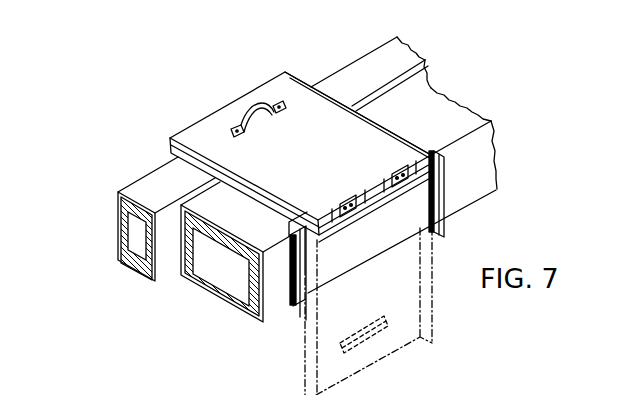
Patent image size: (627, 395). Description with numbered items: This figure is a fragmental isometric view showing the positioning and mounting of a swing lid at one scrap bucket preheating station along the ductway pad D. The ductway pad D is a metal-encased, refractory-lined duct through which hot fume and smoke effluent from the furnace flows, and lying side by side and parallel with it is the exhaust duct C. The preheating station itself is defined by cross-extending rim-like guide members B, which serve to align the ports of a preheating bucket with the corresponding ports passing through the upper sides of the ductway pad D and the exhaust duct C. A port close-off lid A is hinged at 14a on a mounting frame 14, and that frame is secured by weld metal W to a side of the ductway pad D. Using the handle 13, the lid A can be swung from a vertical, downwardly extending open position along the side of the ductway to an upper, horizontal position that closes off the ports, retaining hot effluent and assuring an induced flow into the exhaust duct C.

The handle 13 is at (264, 110).
The mounting frame 14 is at (298, 308).
The hinge 14a is at (397, 203).
The port close-off lid A is at (323, 170).
The rim-like guide member B is at (402, 130).
The exhaust duct C is at (115, 232).
The ductway pad D is at (197, 287).
The weld metal W is at (290, 295).